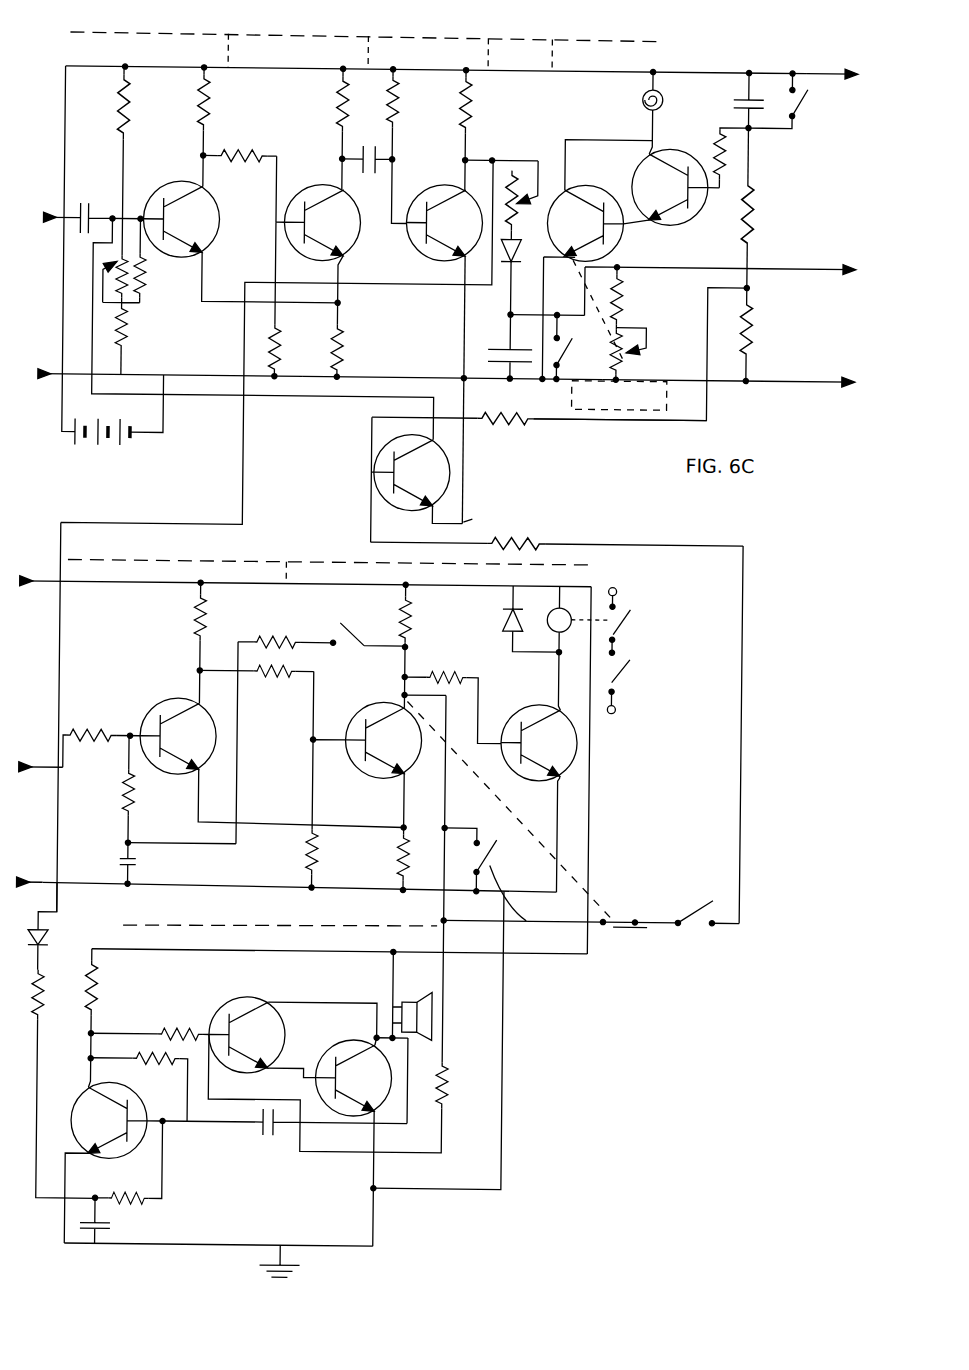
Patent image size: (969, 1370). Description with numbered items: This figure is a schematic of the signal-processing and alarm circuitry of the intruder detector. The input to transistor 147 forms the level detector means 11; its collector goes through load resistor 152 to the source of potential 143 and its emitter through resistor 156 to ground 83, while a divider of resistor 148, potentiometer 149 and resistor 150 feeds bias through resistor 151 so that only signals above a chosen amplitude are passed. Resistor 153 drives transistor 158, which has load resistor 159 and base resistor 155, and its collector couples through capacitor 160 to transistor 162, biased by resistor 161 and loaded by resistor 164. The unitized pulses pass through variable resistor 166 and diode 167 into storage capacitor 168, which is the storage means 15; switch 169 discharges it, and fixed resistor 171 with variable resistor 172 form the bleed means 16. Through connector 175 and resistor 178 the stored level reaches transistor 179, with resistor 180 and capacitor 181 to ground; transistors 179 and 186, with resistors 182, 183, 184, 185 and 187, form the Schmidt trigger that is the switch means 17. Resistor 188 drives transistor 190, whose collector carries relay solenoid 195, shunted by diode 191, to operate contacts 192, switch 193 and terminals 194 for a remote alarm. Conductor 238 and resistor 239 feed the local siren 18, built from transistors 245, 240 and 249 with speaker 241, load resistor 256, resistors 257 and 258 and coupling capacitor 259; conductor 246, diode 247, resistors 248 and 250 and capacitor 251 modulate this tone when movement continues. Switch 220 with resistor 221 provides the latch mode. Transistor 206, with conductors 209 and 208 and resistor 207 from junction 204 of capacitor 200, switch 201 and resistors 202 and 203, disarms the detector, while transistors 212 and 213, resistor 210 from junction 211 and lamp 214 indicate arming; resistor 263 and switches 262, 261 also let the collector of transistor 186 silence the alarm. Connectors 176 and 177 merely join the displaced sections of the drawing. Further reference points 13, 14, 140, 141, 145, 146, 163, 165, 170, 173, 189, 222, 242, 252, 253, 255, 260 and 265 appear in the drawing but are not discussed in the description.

The level detector means 11 is at (147, 31).
The amplifier section 13 is at (273, 35).
The detector section 14 is at (405, 37).
The storage means 15 is at (498, 37).
The bleed rate control means 16 is at (605, 404).
The switch means 17 is at (162, 558).
The alarm means 18 is at (563, 560).
The ground 83 is at (180, 372).
The input terminal 140 is at (48, 220).
The ground terminal 141 is at (46, 368).
The source of potential 143 is at (188, 62).
The battery 145 is at (95, 458).
The coupling capacitor 146 is at (98, 206).
The transistor 147 is at (170, 188).
The resistor 148 is at (116, 130).
The potentiometer 149 is at (108, 274).
The resistor 150 is at (124, 344).
The resistor 151 is at (138, 282).
The load resistor 152 is at (206, 118).
The resistor 153 is at (256, 150).
The resistor 155 is at (275, 354).
The biasing resistor 156 is at (340, 354).
The transistor 158 is at (346, 256).
The load resistor 159 is at (326, 116).
The coupling capacitor 160 is at (354, 149).
The resistor 161 is at (398, 120).
The transistor 162 is at (410, 200).
The conductor 163 is at (444, 390).
The load resistor 164 is at (462, 120).
The conductor 165 is at (492, 160).
The variable resistor 166 is at (508, 230).
The diode 167 is at (522, 270).
The storage capacitor 168 is at (496, 350).
The switch 169 is at (573, 342).
The junction 170 is at (503, 316).
The fixed resistor 171 is at (619, 298).
The variable resistor 172 is at (626, 352).
The mechanical coupling 173 is at (579, 290).
The connector 175 is at (842, 266).
The connector 176 is at (840, 381).
The connector 177 is at (838, 86).
The resistor 178 is at (112, 732).
The transistor 179 is at (160, 700).
The resistor 180 is at (122, 796).
The capacitor 181 is at (120, 876).
The load resistor 182 is at (204, 613).
The resistor 183 is at (392, 866).
The resistor 184 is at (277, 688).
The resistor 185 is at (310, 870).
The transistor 186 is at (373, 776).
The load resistor 187 is at (414, 614).
The resistor 188 is at (458, 670).
The conductor 189 is at (396, 702).
The transistor 190 is at (540, 706).
The diode 191 is at (506, 626).
The contacts 192 is at (632, 618).
The switch 193 is at (632, 658).
The terminals 194 is at (622, 708).
The relay solenoid 195 is at (548, 616).
The capacitor 200 is at (726, 97).
The switch 201 is at (806, 112).
The resistor 202 is at (757, 228).
The resistor 203 is at (751, 338).
The junction 204 is at (755, 296).
The transistor 206 is at (407, 516).
The resistor 207 is at (526, 430).
The conductor 208 is at (469, 513).
The conductor 209 is at (310, 412).
The resistor 210 is at (711, 132).
The junction 211 is at (752, 140).
The transistor 212 is at (695, 220).
The transistor 213 is at (610, 254).
The lamp 214 is at (636, 114).
The switch 220 is at (360, 628).
The resistor 221 is at (286, 636).
The junction 222 is at (120, 846).
The conductor 238 is at (456, 796).
The resistor 239 is at (458, 1104).
The transistor 240 is at (348, 1042).
The speaker 241 is at (418, 996).
The conductor 242 is at (412, 1044).
The transistor 245 is at (260, 992).
The conductor 246 is at (412, 294).
The diode 247 is at (58, 940).
The resistor 248 is at (48, 1022).
The transistor 249 is at (74, 1104).
The resistor 250 is at (148, 1194).
The capacitor 251 is at (110, 1238).
The ground 252 is at (280, 1242).
The conductor 253 is at (470, 1188).
The conductor 255 is at (598, 832).
The load resistor 256 is at (108, 994).
The resistor 257 is at (202, 1034).
The resistor 258 is at (170, 1087).
The coupling capacitor 259 is at (266, 1142).
The conductor 260 is at (524, 907).
The switch 261 is at (614, 932).
The switch 262 is at (697, 920).
The resistor 263 is at (521, 520).
The switch 265 is at (506, 860).